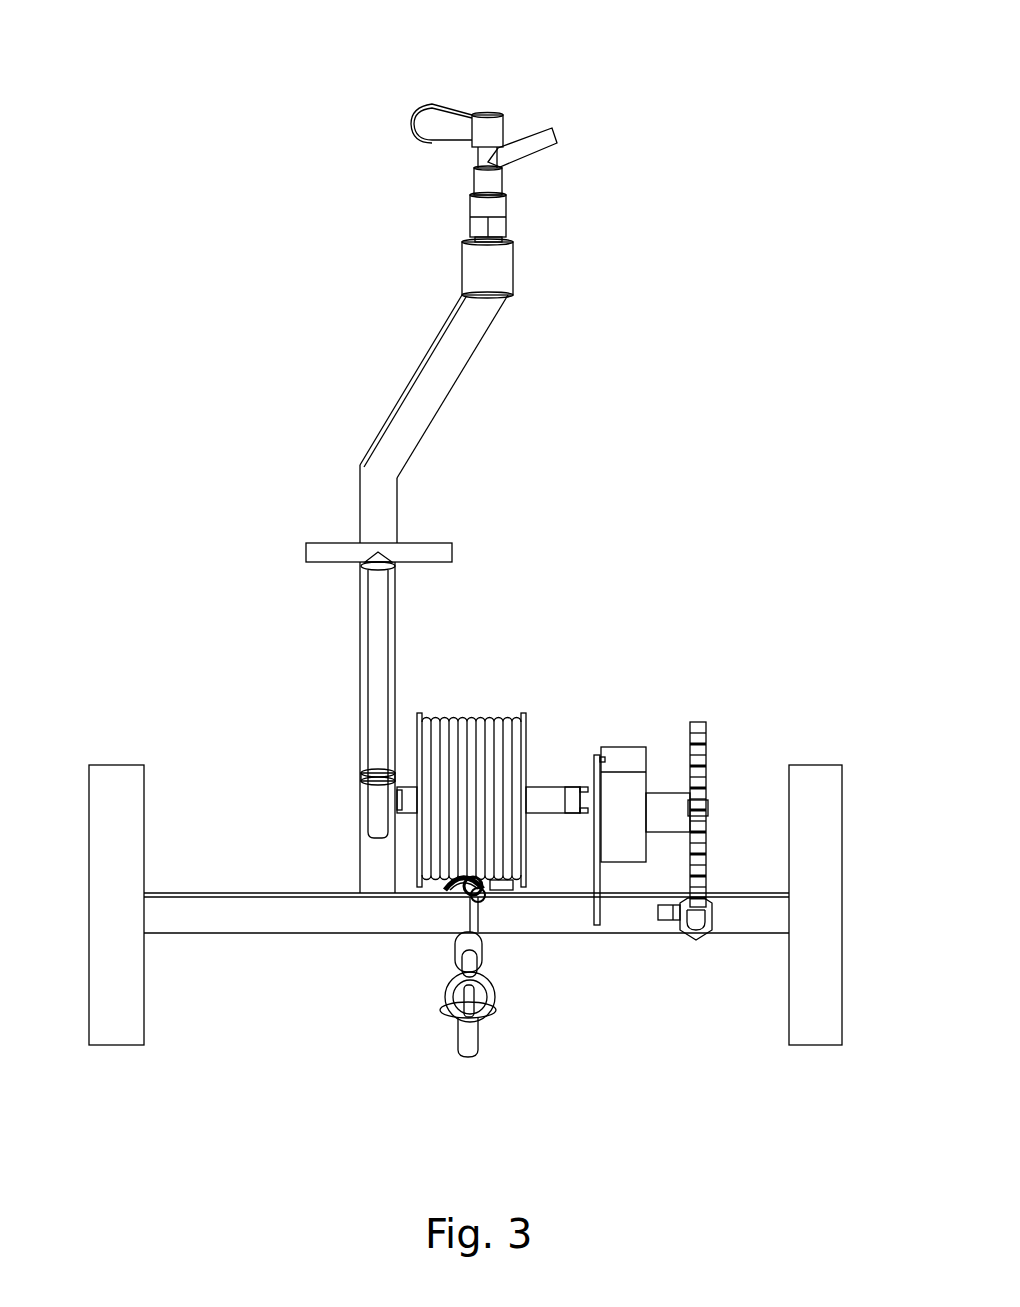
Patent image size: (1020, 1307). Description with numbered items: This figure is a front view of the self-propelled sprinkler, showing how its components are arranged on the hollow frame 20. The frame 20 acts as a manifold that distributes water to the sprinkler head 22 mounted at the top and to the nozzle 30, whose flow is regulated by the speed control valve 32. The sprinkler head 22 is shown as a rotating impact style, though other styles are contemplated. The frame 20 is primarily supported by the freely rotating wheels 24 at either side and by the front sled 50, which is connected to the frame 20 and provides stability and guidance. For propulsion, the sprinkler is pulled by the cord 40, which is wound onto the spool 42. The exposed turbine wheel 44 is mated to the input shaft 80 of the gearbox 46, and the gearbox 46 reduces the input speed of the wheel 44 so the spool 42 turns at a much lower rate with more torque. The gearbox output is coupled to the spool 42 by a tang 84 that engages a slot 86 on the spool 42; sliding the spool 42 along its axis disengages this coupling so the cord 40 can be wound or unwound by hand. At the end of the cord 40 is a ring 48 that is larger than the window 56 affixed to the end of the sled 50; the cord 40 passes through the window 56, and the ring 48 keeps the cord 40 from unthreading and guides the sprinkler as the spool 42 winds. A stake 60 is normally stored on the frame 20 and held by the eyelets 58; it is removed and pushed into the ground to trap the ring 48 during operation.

The hollow frame 20 is at (251, 938).
The sprinkler head 22 is at (488, 115).
The wheels 24 is at (117, 765).
The nozzle 30 is at (704, 893).
The speed control valve 32 is at (685, 938).
The cord 40 is at (467, 917).
The spool 42 is at (473, 722).
The turbine wheel 44 is at (697, 722).
The gearbox 46 is at (627, 757).
The ring 48 is at (497, 1010).
The front sled 50 is at (473, 1057).
The window 56 is at (442, 1002).
The eyelets 58 is at (363, 565).
The stake 60 is at (330, 543).
The input shaft 80 is at (706, 808).
The tang 84 is at (585, 787).
The slot 86 is at (568, 787).